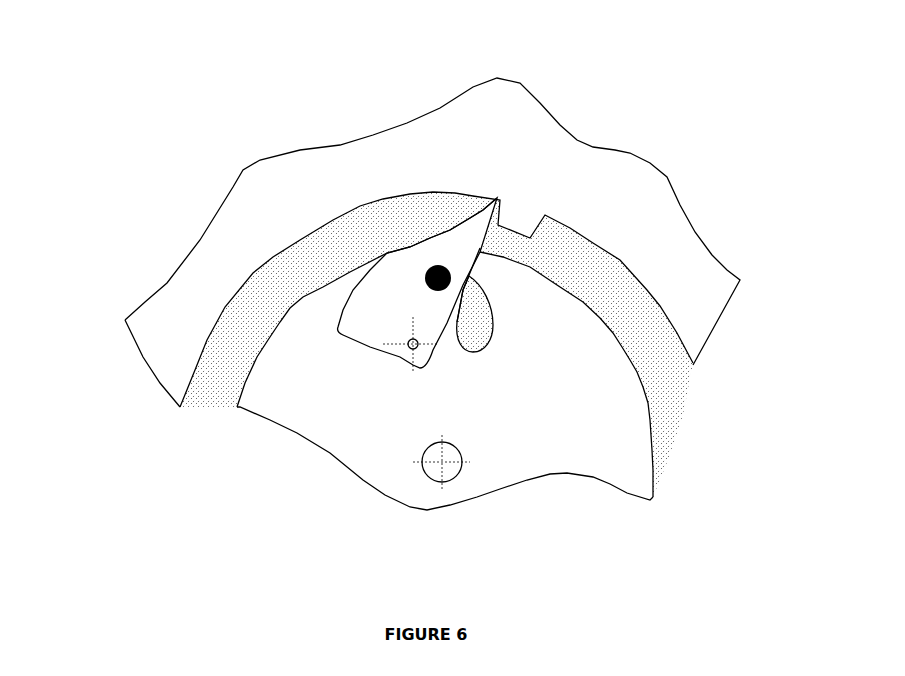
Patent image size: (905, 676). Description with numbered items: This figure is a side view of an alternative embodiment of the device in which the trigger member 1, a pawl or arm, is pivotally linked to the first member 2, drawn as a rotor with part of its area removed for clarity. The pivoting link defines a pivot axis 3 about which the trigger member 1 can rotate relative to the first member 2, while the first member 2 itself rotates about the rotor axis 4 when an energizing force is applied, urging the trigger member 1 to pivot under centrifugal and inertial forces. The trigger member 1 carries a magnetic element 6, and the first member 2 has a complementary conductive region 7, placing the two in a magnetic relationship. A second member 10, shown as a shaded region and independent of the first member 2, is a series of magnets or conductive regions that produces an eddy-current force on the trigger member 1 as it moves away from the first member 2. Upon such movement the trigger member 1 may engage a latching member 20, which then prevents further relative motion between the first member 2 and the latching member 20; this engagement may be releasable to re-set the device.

The trigger member 1 is at (443, 237).
The first member 2 is at (333, 438).
The pivot axis 3 is at (401, 352).
The rotor axis 4 is at (457, 475).
The magnetic element 6 is at (452, 265).
The conductive region 7 is at (490, 325).
The second member 10 is at (645, 330).
The latching member 20 is at (630, 173).